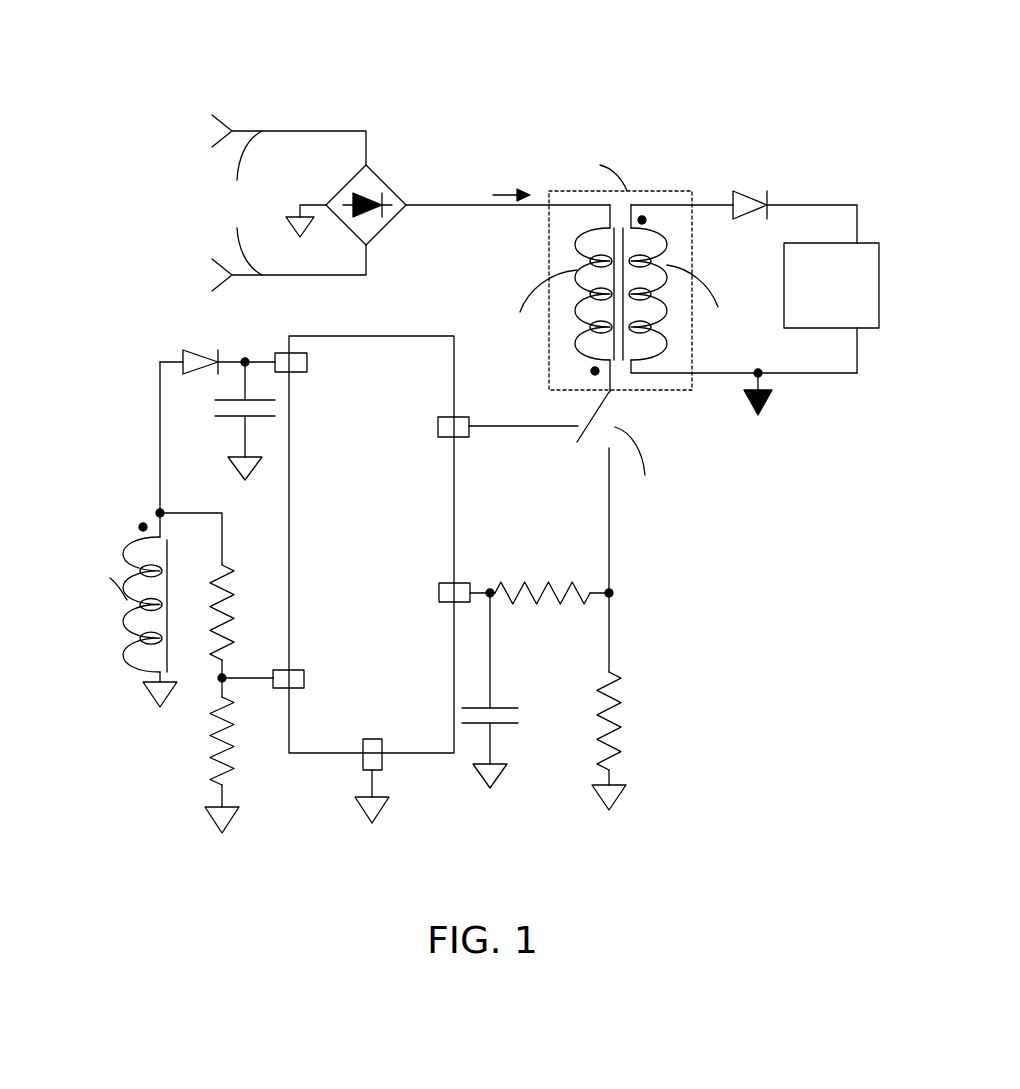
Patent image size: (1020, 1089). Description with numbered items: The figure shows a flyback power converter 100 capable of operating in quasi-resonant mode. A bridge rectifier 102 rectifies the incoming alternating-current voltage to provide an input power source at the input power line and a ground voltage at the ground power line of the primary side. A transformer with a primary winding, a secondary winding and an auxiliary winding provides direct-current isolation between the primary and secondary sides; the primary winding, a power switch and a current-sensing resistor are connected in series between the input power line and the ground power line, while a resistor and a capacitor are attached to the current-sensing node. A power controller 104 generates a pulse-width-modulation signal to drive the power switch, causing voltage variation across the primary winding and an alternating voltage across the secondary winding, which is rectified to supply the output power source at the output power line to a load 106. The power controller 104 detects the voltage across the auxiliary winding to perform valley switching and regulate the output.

The flyback power converter 100 is at (515, 72).
The bridge rectifier 102 is at (378, 170).
The power controller 104 is at (377, 519).
The load 106 is at (847, 309).